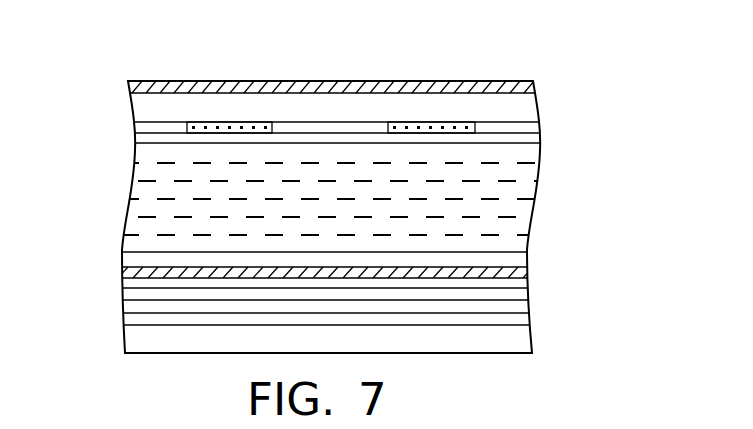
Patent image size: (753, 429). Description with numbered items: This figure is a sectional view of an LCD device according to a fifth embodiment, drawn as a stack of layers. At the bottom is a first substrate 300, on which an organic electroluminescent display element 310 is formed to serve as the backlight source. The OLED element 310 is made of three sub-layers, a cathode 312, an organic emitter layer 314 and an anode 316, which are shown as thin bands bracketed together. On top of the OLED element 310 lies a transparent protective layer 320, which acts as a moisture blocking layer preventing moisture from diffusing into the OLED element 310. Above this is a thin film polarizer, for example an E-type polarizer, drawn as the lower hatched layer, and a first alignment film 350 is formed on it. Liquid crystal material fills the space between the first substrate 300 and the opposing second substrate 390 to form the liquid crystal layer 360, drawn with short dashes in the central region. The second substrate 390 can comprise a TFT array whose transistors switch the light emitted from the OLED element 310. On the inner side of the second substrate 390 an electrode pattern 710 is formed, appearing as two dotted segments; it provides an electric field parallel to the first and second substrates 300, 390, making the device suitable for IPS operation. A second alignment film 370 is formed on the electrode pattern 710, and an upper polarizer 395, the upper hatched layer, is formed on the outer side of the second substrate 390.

The first substrate 300 is at (126, 338).
The organic electroluminescent display (OLED) element 310 is at (396, 314).
The cathode 312 is at (528, 322).
The organic emitter layer 314 is at (528, 312).
The anode 316 is at (528, 300).
The transparent protective layer 320 is at (122, 283).
The first alignment film 350 is at (123, 257).
The liquid crystal layer 360 is at (520, 201).
The second alignment film 370 is at (136, 138).
The second substrate 390 is at (535, 113).
The upper polarizer 395 is at (533, 88).
The electrode pattern 710 is at (233, 124).